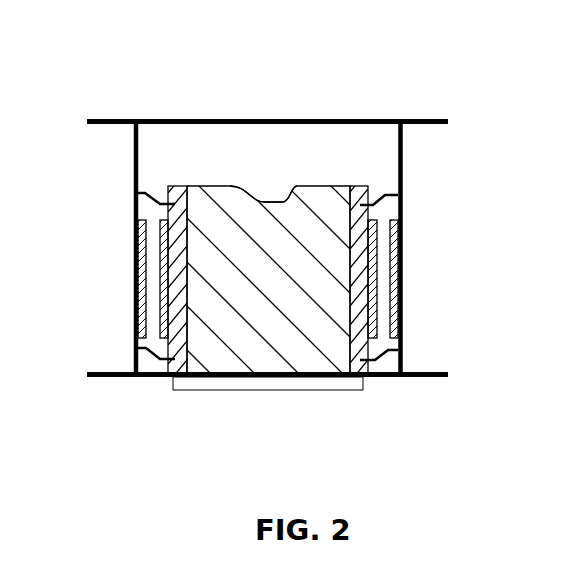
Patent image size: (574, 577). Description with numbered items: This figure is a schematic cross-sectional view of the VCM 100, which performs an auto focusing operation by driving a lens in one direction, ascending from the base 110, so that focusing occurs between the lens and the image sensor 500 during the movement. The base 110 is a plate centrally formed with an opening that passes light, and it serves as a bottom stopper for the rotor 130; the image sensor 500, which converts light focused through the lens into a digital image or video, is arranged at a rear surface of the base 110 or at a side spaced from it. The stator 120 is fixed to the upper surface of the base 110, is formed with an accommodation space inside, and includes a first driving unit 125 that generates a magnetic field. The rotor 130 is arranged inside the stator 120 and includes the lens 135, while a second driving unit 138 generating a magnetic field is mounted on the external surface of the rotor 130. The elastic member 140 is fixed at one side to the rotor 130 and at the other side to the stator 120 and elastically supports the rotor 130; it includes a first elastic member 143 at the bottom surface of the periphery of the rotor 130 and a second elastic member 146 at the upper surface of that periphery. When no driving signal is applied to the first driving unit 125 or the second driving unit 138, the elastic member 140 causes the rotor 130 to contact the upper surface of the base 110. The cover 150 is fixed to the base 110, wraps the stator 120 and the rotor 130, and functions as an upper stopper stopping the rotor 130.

The VCM 100 is at (468, 88).
The base 110 is at (393, 382).
The stator 120 is at (409, 213).
The first driving unit 125 is at (403, 265).
The rotor 130 is at (245, 183).
The lens 135 is at (307, 197).
The second driving unit 138 is at (377, 288).
The elastic member 140 is at (149, 189).
The first elastic member 143 is at (402, 350).
The second elastic member 146 is at (392, 188).
The cover 150 is at (369, 116).
The image sensor 500 is at (197, 382).